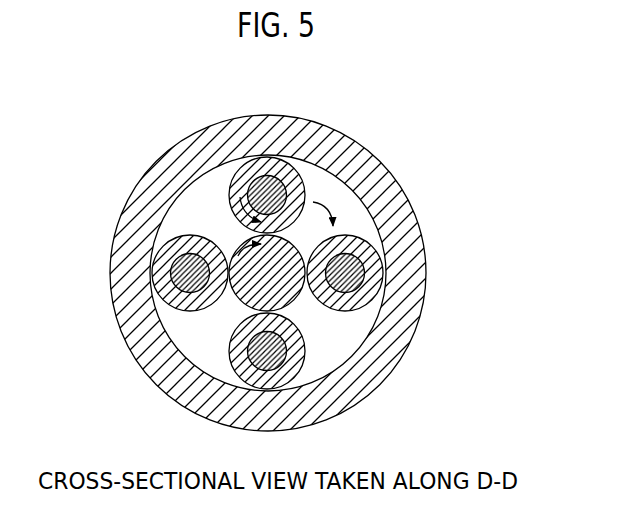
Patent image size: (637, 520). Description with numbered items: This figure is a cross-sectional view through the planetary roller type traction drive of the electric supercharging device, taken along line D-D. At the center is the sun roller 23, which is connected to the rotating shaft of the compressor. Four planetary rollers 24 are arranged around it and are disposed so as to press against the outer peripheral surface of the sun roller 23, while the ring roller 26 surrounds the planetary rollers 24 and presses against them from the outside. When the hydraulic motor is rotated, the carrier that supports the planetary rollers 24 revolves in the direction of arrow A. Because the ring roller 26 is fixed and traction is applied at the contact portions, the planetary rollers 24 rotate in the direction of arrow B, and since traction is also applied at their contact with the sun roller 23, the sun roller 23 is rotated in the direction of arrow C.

The sun roller 23 is at (287, 289).
The planetary rollers 24 is at (360, 263).
The ring roller 26 is at (390, 188).
The arrow A is at (313, 202).
The arrow B is at (240, 197).
The arrow C is at (238, 255).